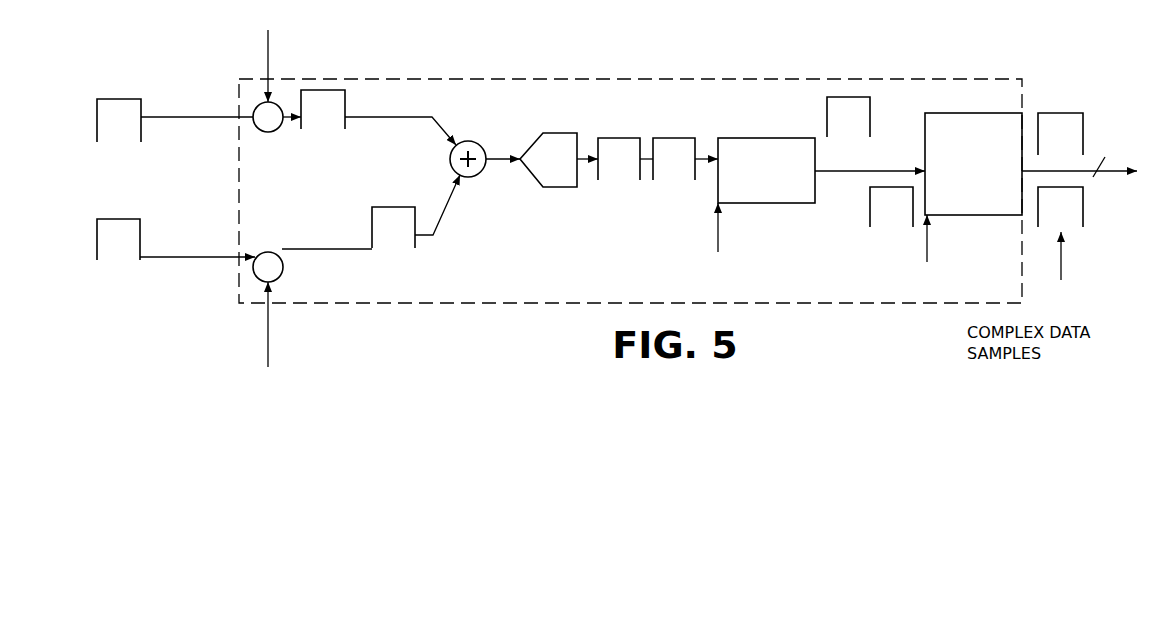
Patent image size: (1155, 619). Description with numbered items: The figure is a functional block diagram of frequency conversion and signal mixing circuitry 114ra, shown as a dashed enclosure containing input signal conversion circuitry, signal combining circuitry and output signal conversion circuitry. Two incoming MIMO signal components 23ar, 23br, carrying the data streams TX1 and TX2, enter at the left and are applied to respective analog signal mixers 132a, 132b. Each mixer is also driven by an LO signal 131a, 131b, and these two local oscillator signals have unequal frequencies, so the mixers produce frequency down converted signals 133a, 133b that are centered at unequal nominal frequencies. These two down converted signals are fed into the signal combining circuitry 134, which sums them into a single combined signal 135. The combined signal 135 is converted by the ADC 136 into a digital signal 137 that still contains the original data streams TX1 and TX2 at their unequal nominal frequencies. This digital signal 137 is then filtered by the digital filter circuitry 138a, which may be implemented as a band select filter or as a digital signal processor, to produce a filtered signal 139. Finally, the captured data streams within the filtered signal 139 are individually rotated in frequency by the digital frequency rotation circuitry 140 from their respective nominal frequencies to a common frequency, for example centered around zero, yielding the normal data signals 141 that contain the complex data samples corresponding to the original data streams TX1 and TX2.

The incoming MIMO signal component 23ar is at (137, 97).
The incoming MIMO signal component 23br is at (127, 218).
The LO signal 131a is at (268, 42).
The LO signal 131b is at (263, 333).
The analog signal mixer 132a is at (268, 132).
The analog signal mixer 132b is at (265, 250).
The frequency down converted signal 133a is at (347, 112).
The frequency down converted signal 133b is at (415, 207).
The signal combining circuitry 134 is at (478, 143).
The combined signal 135 is at (495, 164).
The ADC 136 is at (560, 133).
The digital signal 137 is at (688, 193).
The digital filter circuitry 138a is at (760, 138).
The filtered signal 139 is at (800, 237).
The digital frequency rotation circuitry 140 is at (983, 113).
The normal data signals 141 is at (1115, 157).
The frequency conversion and signal mixing circuitry 114ra is at (1012, 78).